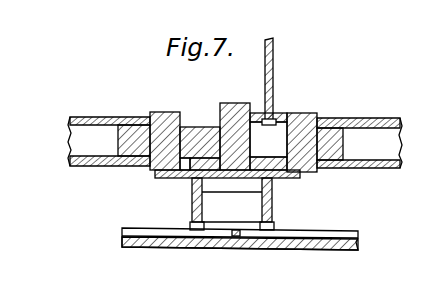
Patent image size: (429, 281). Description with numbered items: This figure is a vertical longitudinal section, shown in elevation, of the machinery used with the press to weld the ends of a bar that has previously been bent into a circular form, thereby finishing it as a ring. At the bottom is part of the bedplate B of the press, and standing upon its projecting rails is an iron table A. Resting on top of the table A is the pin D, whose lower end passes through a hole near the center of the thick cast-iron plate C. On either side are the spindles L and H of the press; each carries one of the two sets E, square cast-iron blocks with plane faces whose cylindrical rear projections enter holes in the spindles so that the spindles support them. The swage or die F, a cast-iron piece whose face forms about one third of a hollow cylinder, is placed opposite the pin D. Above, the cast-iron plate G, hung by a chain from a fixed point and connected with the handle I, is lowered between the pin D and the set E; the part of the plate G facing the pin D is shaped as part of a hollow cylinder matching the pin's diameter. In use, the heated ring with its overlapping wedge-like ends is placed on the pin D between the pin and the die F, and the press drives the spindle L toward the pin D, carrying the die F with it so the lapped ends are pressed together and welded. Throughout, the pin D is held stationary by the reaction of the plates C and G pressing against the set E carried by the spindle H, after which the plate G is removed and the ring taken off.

The iron table A is at (227, 200).
The bedplate B is at (240, 239).
The thick plate of cast iron C is at (238, 164).
The pin D is at (235, 136).
The sets E is at (232, 142).
The swage F is at (200, 142).
The plate of cast iron G is at (275, 111).
The spindle H is at (359, 144).
The handle I is at (275, 80).
The spindle L is at (109, 140).